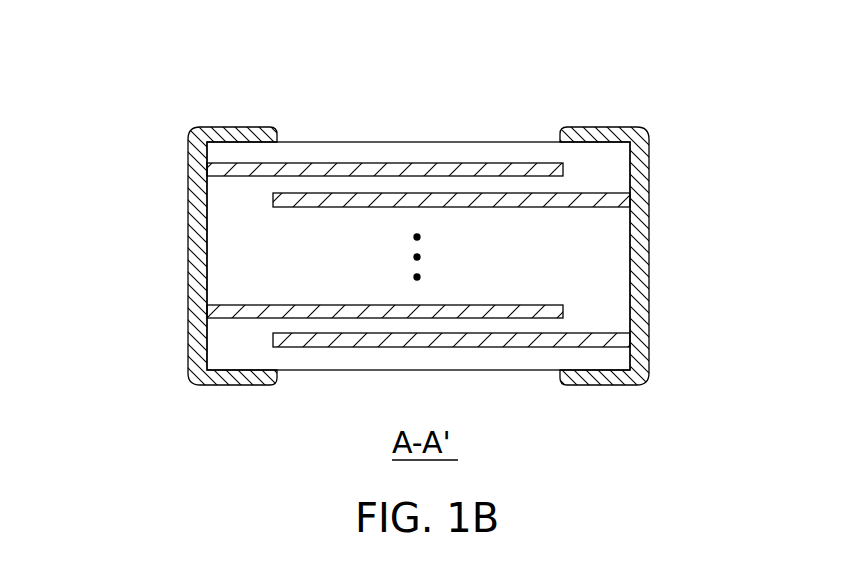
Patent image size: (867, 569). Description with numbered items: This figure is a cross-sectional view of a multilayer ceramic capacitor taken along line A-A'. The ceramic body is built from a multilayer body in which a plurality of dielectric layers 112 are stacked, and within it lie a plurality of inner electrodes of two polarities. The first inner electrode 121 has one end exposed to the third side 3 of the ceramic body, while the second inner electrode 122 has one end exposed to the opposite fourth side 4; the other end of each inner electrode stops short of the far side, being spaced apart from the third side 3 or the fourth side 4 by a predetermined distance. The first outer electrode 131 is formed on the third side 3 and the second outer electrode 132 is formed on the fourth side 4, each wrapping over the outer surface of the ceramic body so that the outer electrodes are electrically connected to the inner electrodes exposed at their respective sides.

The third side 3 is at (178, 313).
The fourth side 4 is at (658, 186).
The dielectric layer 112 is at (553, 325).
The first inner electrode 121 is at (212, 168).
The second inner electrode 122 is at (600, 340).
The first outer electrode 131 is at (237, 130).
The second outer electrode 132 is at (605, 130).